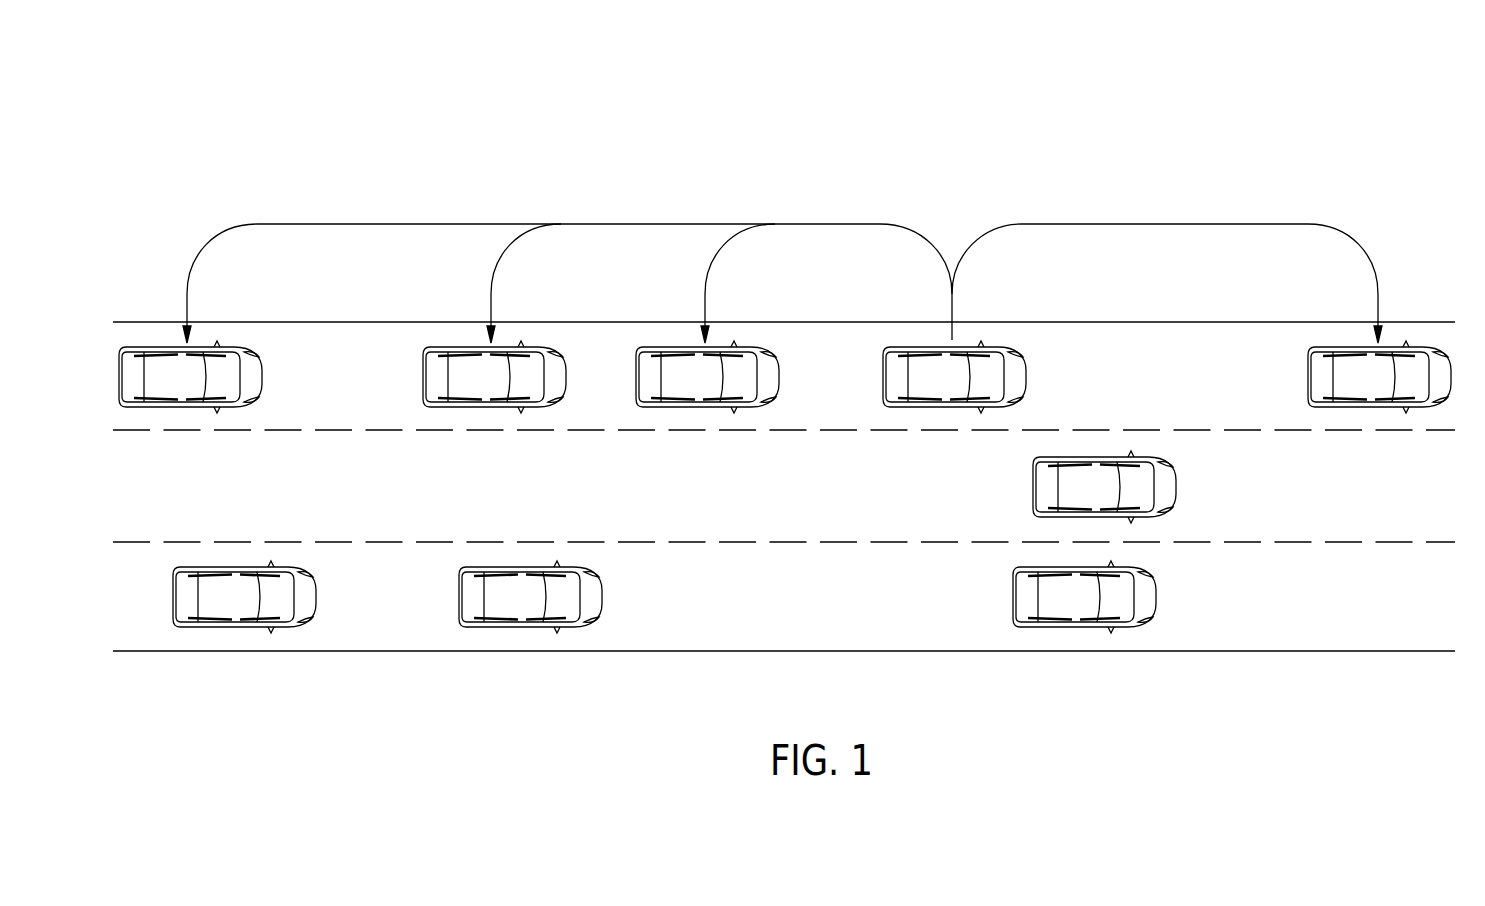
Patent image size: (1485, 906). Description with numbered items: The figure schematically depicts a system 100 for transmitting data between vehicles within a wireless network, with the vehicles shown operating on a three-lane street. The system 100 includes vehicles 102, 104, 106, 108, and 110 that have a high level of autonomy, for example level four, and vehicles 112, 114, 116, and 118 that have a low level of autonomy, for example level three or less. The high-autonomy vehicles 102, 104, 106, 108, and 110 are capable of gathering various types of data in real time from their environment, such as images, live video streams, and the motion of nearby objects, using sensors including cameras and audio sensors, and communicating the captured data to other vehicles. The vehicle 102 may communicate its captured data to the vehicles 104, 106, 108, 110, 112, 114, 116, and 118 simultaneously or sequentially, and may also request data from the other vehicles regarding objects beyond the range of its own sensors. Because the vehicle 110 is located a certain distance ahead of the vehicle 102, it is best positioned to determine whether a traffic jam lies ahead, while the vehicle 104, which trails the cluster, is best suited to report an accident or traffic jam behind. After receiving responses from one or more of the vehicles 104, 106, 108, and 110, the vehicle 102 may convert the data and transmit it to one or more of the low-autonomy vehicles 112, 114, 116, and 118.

The system 100 is at (204, 136).
The vehicle 102 is at (954, 408).
The vehicle 104 is at (190, 408).
The vehicle 106 is at (494, 408).
The vehicle 108 is at (707, 408).
The vehicle 110 is at (1383, 408).
The vehicle 112 is at (1107, 456).
The vehicle 114 is at (240, 628).
The vehicle 116 is at (527, 628).
The vehicle 118 is at (1082, 628).